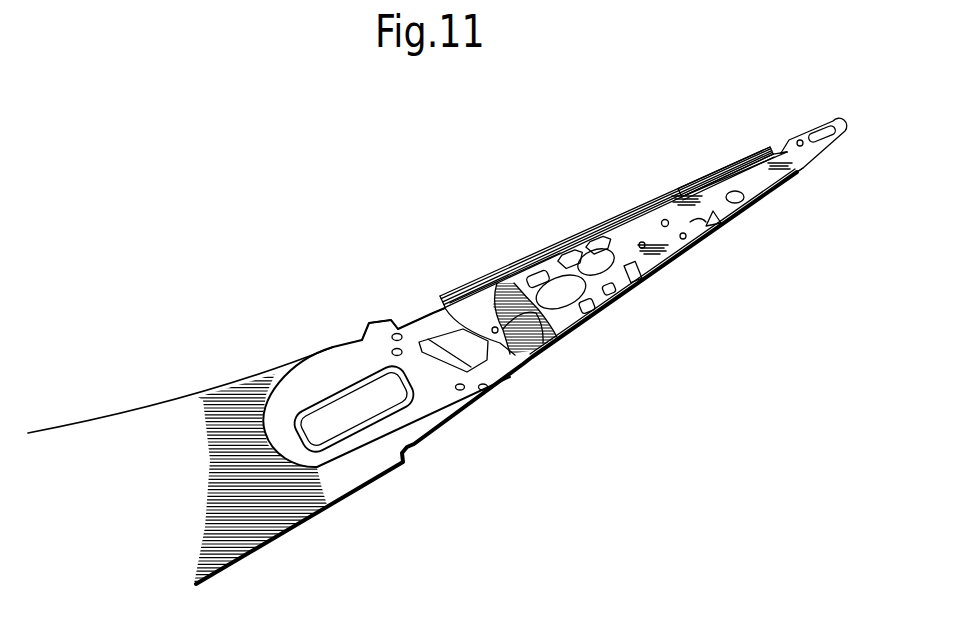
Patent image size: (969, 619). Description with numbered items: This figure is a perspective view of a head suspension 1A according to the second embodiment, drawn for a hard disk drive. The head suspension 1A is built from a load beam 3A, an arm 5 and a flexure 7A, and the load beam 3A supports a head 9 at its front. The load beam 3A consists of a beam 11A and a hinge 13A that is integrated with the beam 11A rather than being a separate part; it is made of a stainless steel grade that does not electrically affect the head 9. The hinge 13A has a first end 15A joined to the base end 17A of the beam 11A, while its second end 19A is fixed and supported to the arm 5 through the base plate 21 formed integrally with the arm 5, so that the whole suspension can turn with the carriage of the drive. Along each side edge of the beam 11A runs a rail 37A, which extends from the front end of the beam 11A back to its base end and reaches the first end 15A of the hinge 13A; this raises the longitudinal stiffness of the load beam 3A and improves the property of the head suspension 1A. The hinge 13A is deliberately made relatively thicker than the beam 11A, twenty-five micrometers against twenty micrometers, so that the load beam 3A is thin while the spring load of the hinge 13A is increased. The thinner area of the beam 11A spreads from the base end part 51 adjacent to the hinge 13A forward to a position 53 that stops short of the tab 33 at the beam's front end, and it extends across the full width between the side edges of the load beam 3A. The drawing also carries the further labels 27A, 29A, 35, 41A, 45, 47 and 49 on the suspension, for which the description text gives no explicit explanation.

The head suspension 1A is at (580, 150).
The load beam 3A is at (673, 183).
The arm 5 is at (128, 408).
The flexure 7A is at (517, 252).
The head 9 is at (753, 173).
The beam 11A is at (625, 243).
The hinge 13A is at (415, 320).
The first end of the hinge 15A is at (462, 323).
The base end of the beam 17A is at (570, 350).
The second end of the hinge 19A is at (315, 378).
The base plate 21 is at (275, 378).
The end portion 27A is at (803, 183).
The hole 29A is at (690, 222).
The tab 33 is at (822, 122).
The hole 35 is at (733, 192).
The rail 37A is at (541, 236).
The holes 41A is at (460, 391).
The window 45 is at (453, 343).
The tab 47 is at (362, 333).
The projection 49 is at (713, 217).
The base end part of the beam 51 is at (533, 367).
The position short of the tab 53 is at (760, 178).